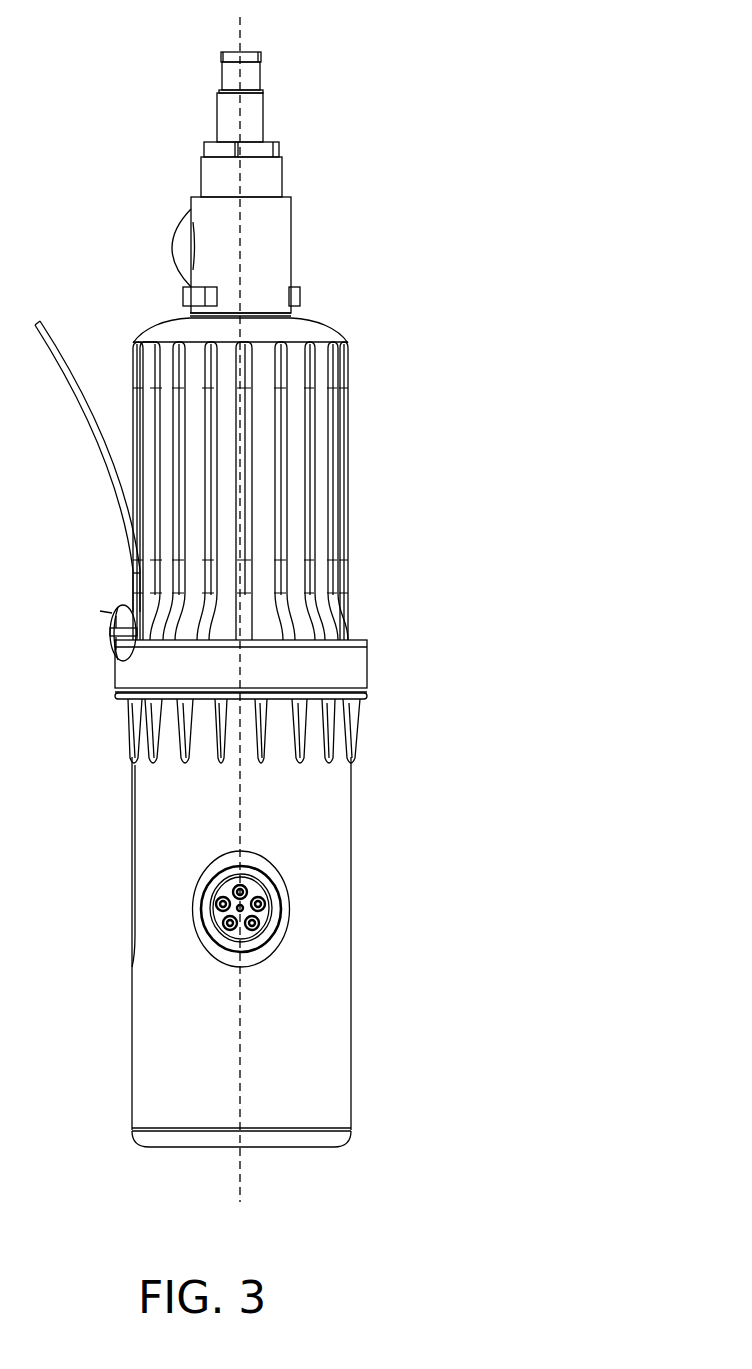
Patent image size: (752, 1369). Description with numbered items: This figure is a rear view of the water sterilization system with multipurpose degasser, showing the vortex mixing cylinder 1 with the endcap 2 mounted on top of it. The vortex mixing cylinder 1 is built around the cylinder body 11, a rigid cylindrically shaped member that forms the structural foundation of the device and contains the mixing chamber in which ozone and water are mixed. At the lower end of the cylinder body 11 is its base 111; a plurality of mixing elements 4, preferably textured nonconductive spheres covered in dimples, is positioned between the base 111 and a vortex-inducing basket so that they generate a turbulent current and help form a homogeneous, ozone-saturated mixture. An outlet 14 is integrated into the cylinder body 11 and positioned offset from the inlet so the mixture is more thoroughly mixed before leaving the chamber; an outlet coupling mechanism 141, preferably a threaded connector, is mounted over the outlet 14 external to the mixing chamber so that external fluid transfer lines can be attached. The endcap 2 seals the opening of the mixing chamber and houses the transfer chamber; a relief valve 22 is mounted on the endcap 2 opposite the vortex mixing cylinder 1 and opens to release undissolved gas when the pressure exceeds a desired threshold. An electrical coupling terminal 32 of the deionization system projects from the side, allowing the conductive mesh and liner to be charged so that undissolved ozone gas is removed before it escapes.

The vortex mixing cylinder 1 is at (299, 614).
The endcap 2 is at (176, 332).
The mixing elements 4 is at (240, 17).
The cylinder body 11 is at (293, 988).
The outlet 14 is at (307, 942).
The relief valve 22 is at (289, 247).
The electrical coupling terminal 32 is at (118, 615).
The base 111 is at (293, 1146).
The outlet coupling mechanism 141 is at (257, 914).